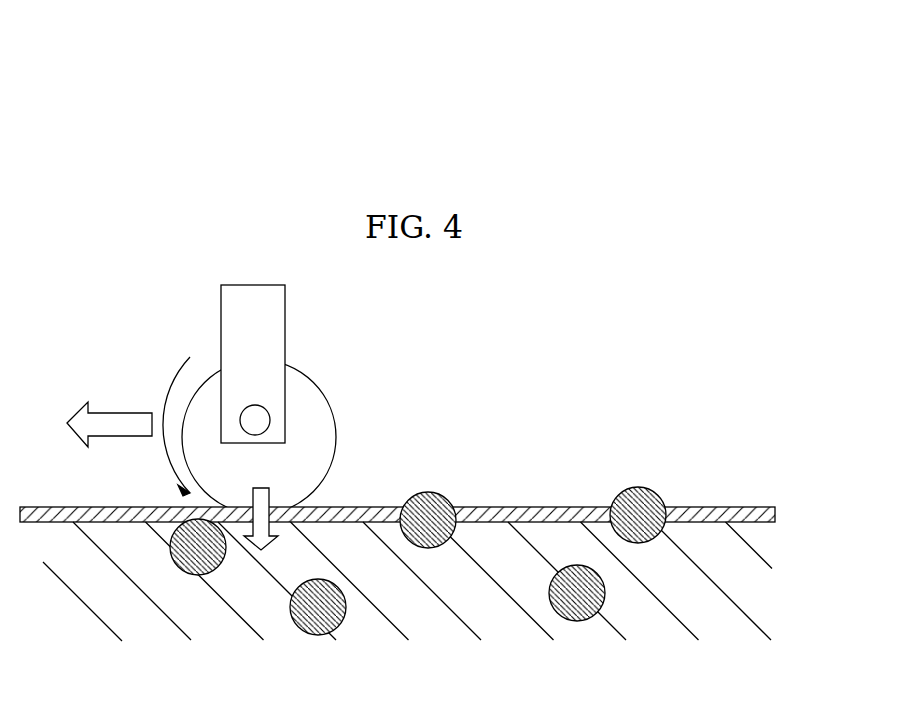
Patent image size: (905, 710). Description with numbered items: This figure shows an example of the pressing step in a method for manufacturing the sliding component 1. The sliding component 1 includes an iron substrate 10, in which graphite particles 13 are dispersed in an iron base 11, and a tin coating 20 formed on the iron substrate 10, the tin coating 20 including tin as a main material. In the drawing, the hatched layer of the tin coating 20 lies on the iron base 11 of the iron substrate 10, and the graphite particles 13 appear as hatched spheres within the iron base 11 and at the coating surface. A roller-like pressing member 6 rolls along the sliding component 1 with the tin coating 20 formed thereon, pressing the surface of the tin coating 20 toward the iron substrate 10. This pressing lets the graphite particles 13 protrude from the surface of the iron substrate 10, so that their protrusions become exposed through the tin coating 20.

The sliding component 1 is at (717, 425).
The roller-like pressing member 6 is at (308, 388).
The iron substrate 10 is at (783, 532).
The iron base 11 is at (113, 605).
The graphite particles 13 is at (193, 575).
The tin coating 20 is at (353, 510).